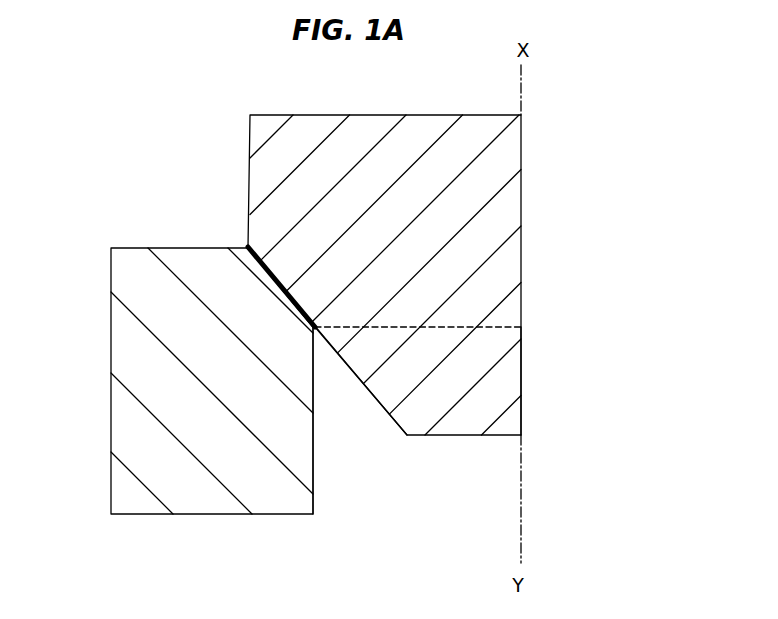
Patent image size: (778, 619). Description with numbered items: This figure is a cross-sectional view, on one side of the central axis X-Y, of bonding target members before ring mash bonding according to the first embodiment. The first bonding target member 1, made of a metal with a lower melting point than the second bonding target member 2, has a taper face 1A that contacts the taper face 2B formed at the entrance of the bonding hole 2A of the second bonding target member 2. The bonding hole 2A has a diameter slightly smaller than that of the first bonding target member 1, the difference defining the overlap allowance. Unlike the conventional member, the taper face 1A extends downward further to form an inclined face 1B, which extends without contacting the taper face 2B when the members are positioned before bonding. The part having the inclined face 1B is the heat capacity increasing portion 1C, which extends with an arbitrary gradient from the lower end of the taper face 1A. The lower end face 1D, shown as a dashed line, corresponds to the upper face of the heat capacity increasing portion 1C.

The first bonding target member 1 is at (535, 283).
The taper face 1A is at (270, 282).
The inclined face 1B is at (373, 398).
The heat capacity increasing portion 1C is at (498, 392).
The lower end face 1D is at (428, 330).
The second bonding target member 2 is at (119, 241).
The bonding hole 2A is at (358, 468).
The taper face 2B is at (267, 283).